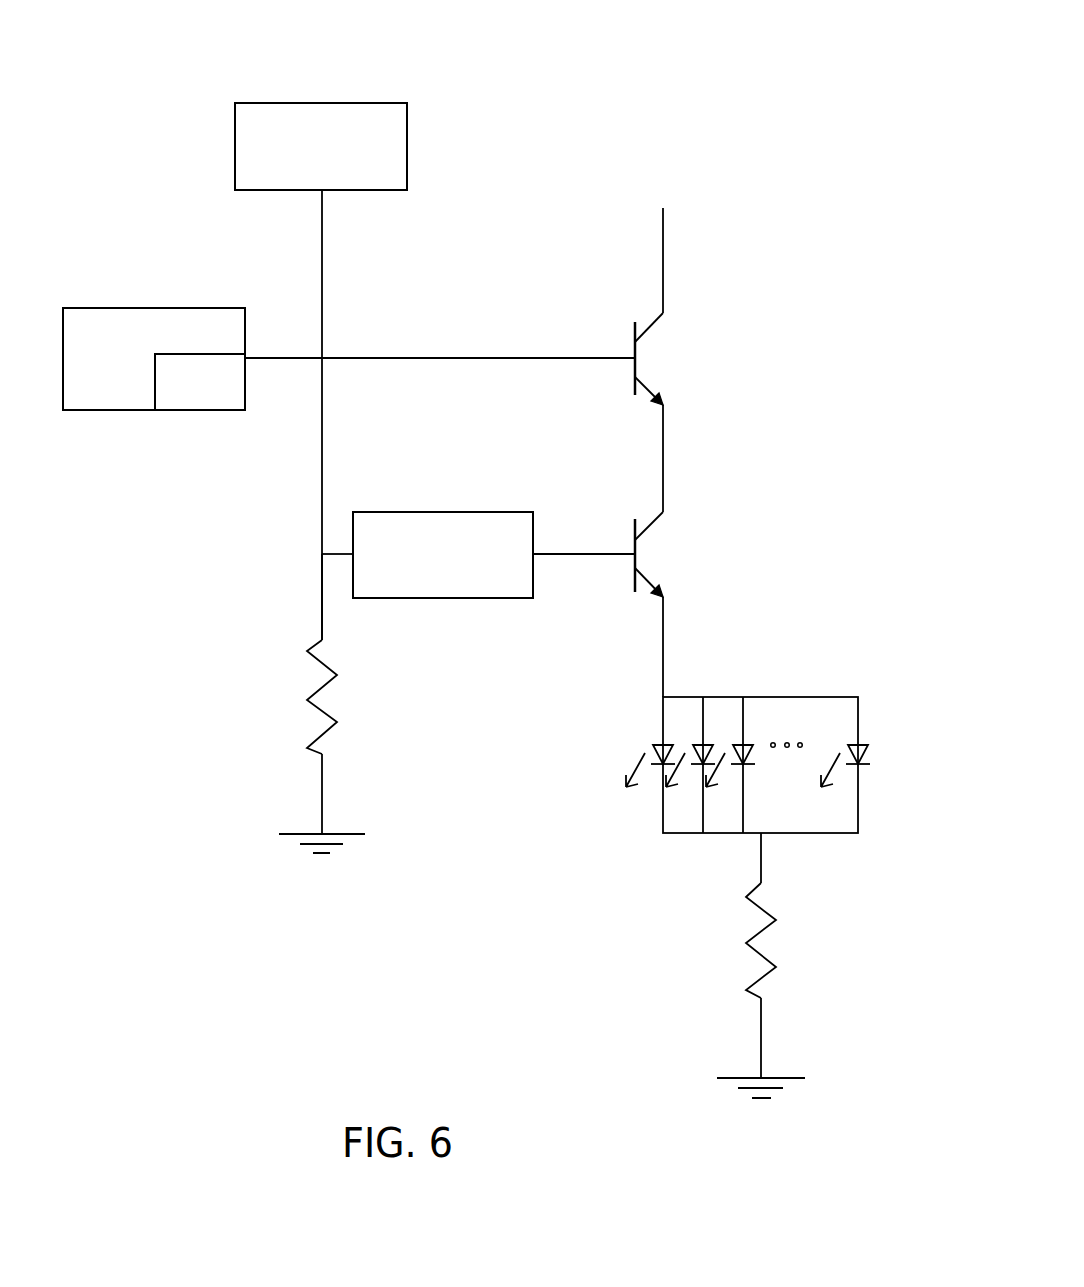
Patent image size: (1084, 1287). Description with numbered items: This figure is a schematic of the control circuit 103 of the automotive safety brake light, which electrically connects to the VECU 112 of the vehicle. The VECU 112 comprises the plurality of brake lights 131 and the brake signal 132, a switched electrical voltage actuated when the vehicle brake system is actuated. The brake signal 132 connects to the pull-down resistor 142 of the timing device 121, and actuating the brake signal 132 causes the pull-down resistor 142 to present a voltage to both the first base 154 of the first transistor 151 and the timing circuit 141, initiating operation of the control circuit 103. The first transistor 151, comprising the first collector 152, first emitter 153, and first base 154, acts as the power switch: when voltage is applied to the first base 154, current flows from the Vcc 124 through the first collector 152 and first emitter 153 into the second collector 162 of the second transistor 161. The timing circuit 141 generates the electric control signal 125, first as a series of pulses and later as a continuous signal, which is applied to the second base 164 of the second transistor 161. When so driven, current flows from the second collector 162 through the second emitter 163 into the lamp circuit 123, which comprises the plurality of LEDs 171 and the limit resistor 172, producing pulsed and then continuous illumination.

The control circuit 103 is at (750, 80).
The VECU 112 is at (235, 152).
The plurality of brake lights 131 is at (407, 128).
The brake signal 132 is at (205, 413).
The timing device 121 is at (169, 544).
The timing circuit 141 is at (335, 583).
The pull-down resistor 142 is at (307, 698).
The electric control signal 125 is at (555, 575).
The Vcc 124 is at (700, 187).
The first transistor 151 is at (673, 358).
The first collector 152 is at (667, 313).
The first emitter 153 is at (667, 405).
The first base 154 is at (590, 350).
The second transistor 161 is at (670, 553).
The second collector 162 is at (675, 515).
The second emitter 163 is at (675, 600).
The second base 164 is at (622, 525).
The plurality of LEDs 171 is at (758, 725).
The lamp circuit 123 is at (878, 758).
The limit resistor 172 is at (773, 942).